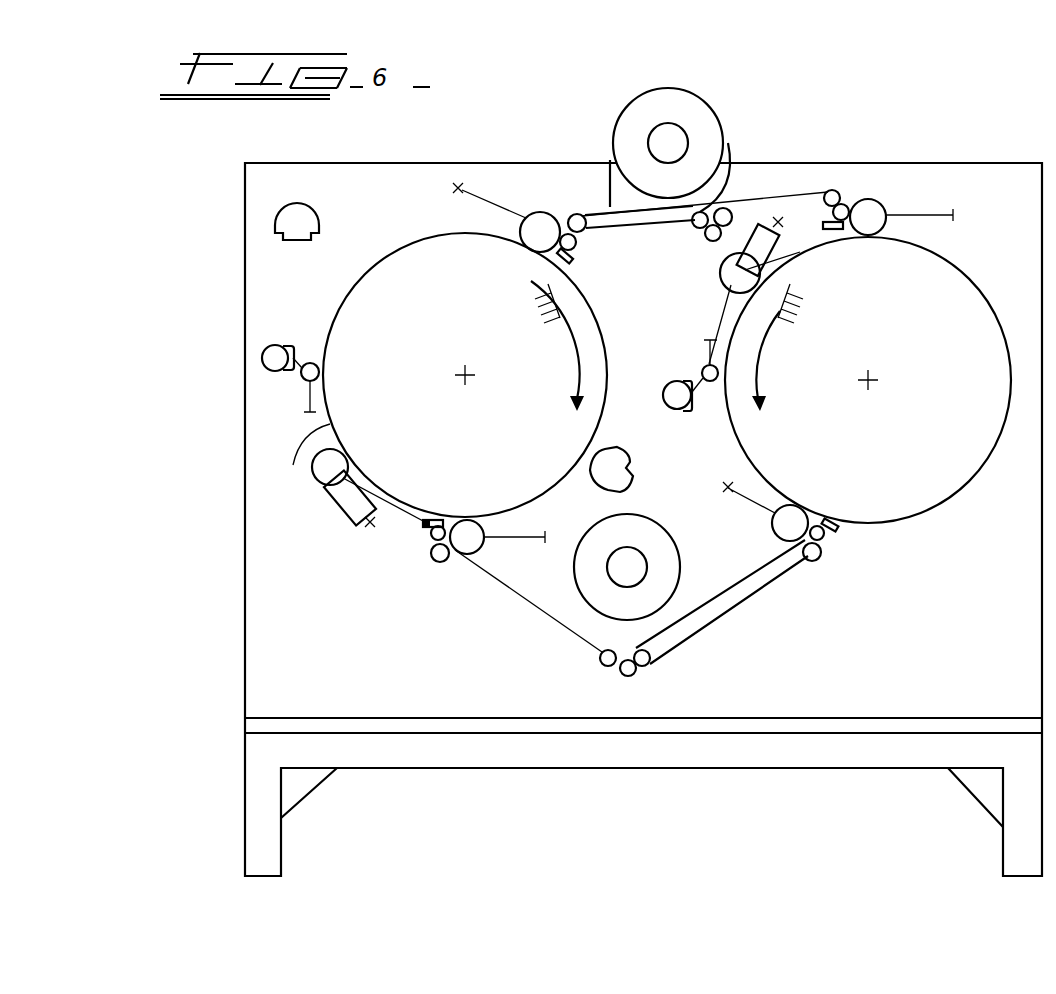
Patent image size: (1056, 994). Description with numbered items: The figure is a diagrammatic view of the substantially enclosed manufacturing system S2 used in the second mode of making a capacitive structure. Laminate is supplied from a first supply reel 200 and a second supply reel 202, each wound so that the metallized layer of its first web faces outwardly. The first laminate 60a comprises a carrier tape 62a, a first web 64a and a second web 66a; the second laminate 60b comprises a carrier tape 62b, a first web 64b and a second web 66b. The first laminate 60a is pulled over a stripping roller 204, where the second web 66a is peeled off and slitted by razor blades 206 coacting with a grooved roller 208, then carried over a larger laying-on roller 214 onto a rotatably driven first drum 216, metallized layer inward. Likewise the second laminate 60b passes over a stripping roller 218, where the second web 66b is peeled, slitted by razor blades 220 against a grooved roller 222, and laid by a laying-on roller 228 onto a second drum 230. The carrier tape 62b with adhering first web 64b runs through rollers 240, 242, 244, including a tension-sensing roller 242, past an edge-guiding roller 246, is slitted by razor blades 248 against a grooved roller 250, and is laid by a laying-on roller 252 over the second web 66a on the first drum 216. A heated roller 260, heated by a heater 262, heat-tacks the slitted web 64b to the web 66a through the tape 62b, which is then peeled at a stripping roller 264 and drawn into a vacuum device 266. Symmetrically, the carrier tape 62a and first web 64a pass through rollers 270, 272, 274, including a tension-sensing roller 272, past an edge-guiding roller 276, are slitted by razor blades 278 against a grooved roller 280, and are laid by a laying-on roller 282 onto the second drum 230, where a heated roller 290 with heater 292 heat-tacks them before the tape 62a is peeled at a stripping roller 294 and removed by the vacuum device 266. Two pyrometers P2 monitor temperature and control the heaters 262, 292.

The manufacturing system S2 is at (152, 172).
The pyrometer P2 is at (590, 507).
The first supply reel 200 is at (683, 100).
The second supply reel 202 is at (635, 522).
The stripping roller 204 is at (578, 214).
The razor blades 206 is at (568, 262).
The grooved roller 208 is at (577, 246).
The laying-on roller 214 is at (535, 213).
The first drum 216 is at (398, 250).
The stripping roller 218 is at (815, 562).
The razor blades 220 is at (835, 530).
The grooved roller 222 is at (825, 540).
The laying-on roller 228 is at (772, 525).
The second drum 230 is at (982, 297).
The roller 240 is at (650, 660).
The tension-sensing roller 242 is at (620, 676).
The roller 244 is at (600, 658).
The edge-guiding roller 246 is at (438, 563).
The razor blades 248 is at (421, 526).
The grooved roller 250 is at (430, 538).
The laying-on roller 252 is at (481, 545).
The heated roller 260 is at (345, 462).
The heater 262 is at (362, 487).
The stripping roller 264 is at (313, 362).
The vacuum device 266 is at (266, 350).
The roller 270 is at (738, 164).
The tension-sensing roller 272 is at (706, 237).
The roller 274 is at (725, 208).
The edge-guiding roller 276 is at (831, 190).
The razor blades 278 is at (843, 230).
The grooved roller 280 is at (843, 204).
The laying-on roller 282 is at (878, 205).
The heated roller 290 is at (762, 275).
The heater 292 is at (770, 245).
The stripping roller 294 is at (705, 368).
The first laminate 60a is at (610, 162).
The second laminate 60b is at (702, 591).
The carrier tape 62a is at (742, 306).
The carrier tape 62b is at (718, 628).
The first web 64a is at (713, 373).
The first web 64b is at (452, 232).
The second web 66a is at (620, 320).
The second web 66b is at (978, 505).